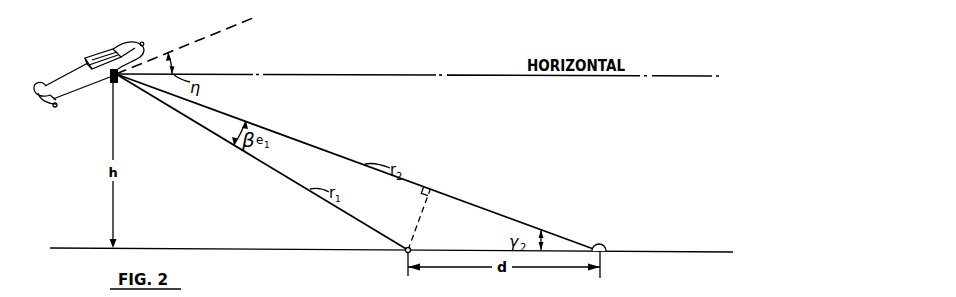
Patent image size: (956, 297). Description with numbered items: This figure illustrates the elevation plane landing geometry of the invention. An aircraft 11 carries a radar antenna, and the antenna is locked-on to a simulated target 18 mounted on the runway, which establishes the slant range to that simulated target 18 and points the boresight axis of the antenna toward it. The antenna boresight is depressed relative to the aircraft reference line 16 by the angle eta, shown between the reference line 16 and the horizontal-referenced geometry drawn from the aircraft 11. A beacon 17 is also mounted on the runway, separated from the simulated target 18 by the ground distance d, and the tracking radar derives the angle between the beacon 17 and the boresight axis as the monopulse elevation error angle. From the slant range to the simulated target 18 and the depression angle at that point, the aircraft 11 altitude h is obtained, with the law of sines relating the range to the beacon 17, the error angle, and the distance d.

The aircraft 11 is at (93, 77).
The aircraft heading (flight path) line 16 is at (185, 45).
The beacon 17 is at (405, 254).
The simulated target 18 is at (606, 246).